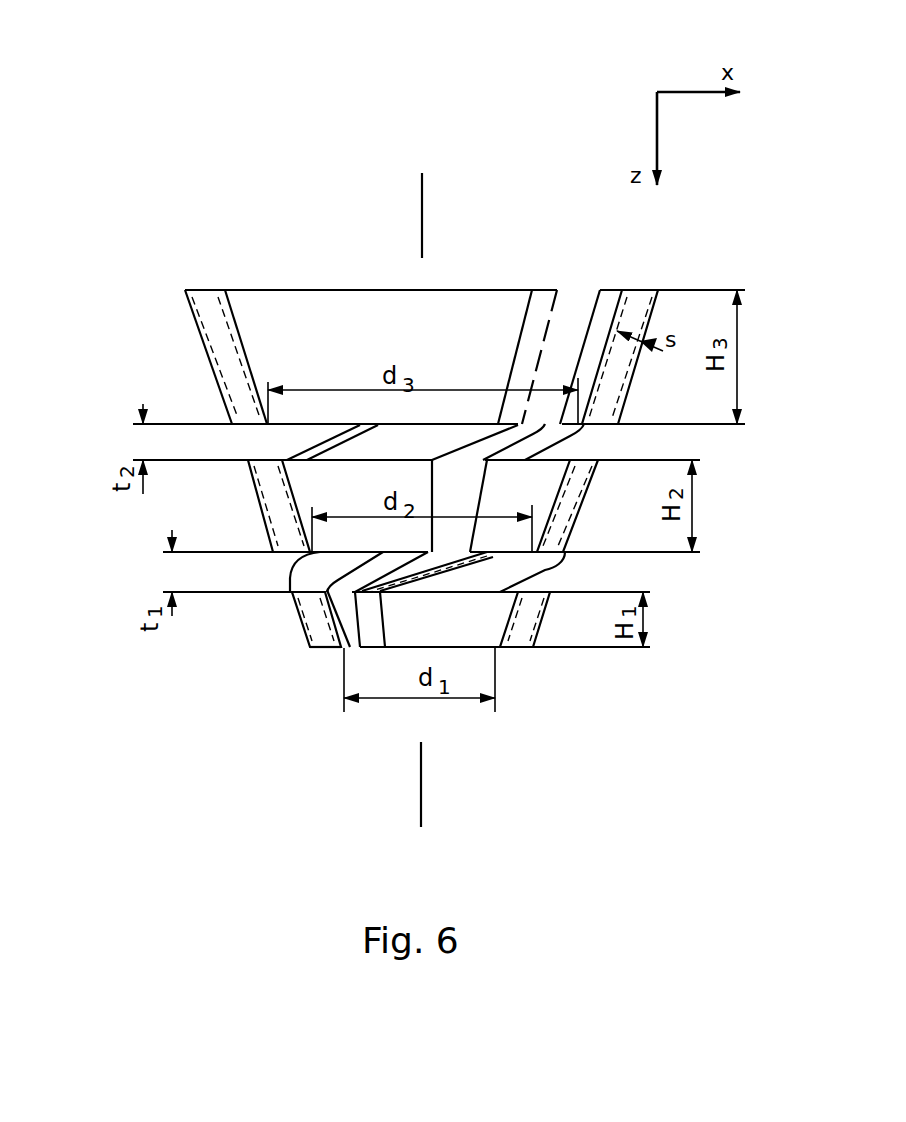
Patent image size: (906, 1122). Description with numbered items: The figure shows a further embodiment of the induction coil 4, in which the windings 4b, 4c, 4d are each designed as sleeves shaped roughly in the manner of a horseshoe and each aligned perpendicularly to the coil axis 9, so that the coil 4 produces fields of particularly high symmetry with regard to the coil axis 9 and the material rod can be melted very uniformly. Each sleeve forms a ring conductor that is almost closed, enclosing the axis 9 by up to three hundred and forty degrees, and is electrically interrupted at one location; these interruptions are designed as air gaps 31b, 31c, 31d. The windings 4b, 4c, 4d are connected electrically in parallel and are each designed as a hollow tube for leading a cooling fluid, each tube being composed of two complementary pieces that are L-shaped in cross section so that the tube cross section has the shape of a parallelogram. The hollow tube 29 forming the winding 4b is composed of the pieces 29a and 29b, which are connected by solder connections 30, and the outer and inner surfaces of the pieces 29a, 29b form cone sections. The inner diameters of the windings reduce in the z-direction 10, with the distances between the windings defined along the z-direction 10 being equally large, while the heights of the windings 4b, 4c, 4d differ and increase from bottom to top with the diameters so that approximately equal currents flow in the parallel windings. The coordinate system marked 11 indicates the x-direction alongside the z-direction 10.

The coil 4 is at (233, 652).
The winding 4b is at (630, 380).
The winding 4c is at (583, 500).
The winding 4d is at (547, 613).
The hollow tube 29 is at (642, 288).
The piece 29a is at (203, 342).
The piece 29b is at (240, 342).
The solder connection 30 is at (225, 293).
The air gap 31b is at (547, 335).
The air gap 31c is at (452, 537).
The air gap 31d is at (347, 618).
The coil axis 9 is at (423, 215).
The z-direction 10 is at (655, 137).
The x coordinate axis 11 is at (697, 90).